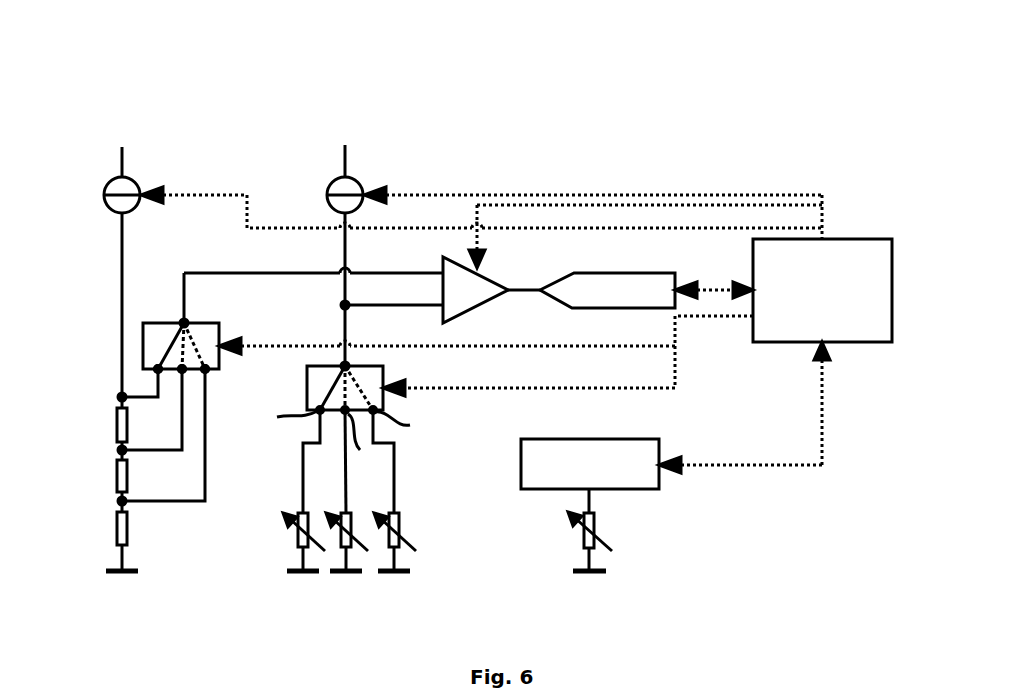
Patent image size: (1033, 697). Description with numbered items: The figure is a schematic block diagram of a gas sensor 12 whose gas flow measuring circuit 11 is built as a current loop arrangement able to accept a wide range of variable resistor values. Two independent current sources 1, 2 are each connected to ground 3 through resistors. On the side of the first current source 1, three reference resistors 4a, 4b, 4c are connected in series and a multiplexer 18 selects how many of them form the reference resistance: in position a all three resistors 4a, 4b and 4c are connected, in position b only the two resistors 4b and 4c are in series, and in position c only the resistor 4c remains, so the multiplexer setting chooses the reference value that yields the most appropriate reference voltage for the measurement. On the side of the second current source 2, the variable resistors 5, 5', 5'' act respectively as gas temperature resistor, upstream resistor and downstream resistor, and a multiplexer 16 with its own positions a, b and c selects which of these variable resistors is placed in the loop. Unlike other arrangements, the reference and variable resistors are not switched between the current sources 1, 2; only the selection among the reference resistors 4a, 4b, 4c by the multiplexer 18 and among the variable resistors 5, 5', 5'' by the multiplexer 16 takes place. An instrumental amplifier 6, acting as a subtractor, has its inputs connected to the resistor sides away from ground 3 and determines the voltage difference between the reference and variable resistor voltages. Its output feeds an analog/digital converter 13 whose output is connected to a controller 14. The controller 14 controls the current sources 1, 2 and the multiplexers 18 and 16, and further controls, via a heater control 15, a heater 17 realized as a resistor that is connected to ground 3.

The current source 1 is at (108, 181).
The current source 2 is at (332, 184).
The ground 3 is at (290, 571).
The reference resistor 4a is at (117, 416).
The reference resistor 4b is at (117, 468).
The reference resistor 4c is at (117, 525).
The variable resistor 5 is at (277, 542).
The variable resistor 5' is at (340, 578).
The variable resistor 5'' is at (419, 540).
The instrumental amplifier 6 is at (483, 295).
The gas flow measuring circuit 11 is at (553, 146).
The gas sensor 12 is at (233, 62).
The analog/digital converter 13 is at (585, 283).
The controller 14 is at (888, 302).
The heater control 15 is at (644, 476).
The multiplexer 16 is at (320, 370).
The heater 17 is at (600, 522).
The multiplexer 18 is at (148, 389).
The multiplexer position a is at (143, 368).
The multiplexer position b is at (178, 372).
The multiplexer position c is at (205, 370).